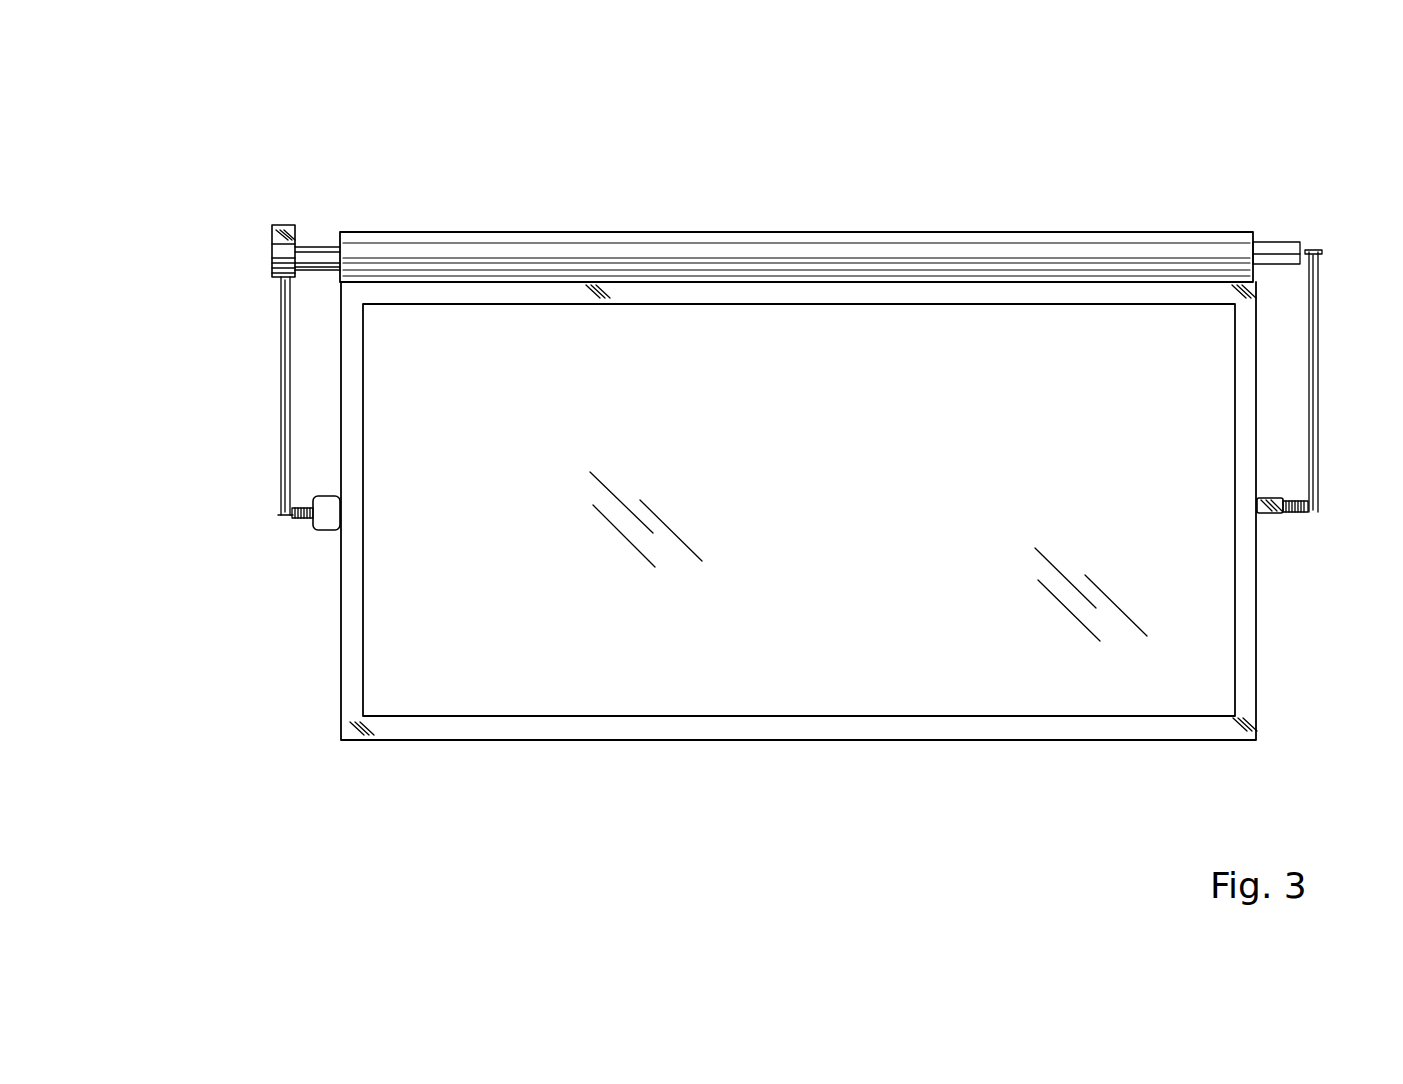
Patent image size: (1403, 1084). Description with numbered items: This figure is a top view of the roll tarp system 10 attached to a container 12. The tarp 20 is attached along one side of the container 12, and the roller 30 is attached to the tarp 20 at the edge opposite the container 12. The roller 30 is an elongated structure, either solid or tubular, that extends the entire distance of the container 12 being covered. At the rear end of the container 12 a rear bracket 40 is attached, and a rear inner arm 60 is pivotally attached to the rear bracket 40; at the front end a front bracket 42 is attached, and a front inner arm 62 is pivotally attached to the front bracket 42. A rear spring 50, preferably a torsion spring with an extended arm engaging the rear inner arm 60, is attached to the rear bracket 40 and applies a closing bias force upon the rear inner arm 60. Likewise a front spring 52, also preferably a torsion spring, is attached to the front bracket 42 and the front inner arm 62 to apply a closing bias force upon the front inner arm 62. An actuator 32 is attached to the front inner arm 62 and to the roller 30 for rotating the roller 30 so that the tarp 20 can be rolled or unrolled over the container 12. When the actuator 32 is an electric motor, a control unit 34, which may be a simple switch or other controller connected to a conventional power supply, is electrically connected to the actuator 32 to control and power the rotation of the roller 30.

The roll tarp system 10 is at (765, 198).
The container 12 is at (578, 675).
The tarp 20 is at (480, 242).
The roller 30 is at (305, 250).
The actuator 32 is at (270, 258).
The control unit 34 is at (292, 520).
The rear bracket 40 is at (1275, 518).
The front bracket 42 is at (318, 528).
The rear spring 50 is at (1308, 514).
The front spring 52 is at (302, 516).
The rear inner arm 60 is at (1312, 320).
The front inner arm 62 is at (285, 405).